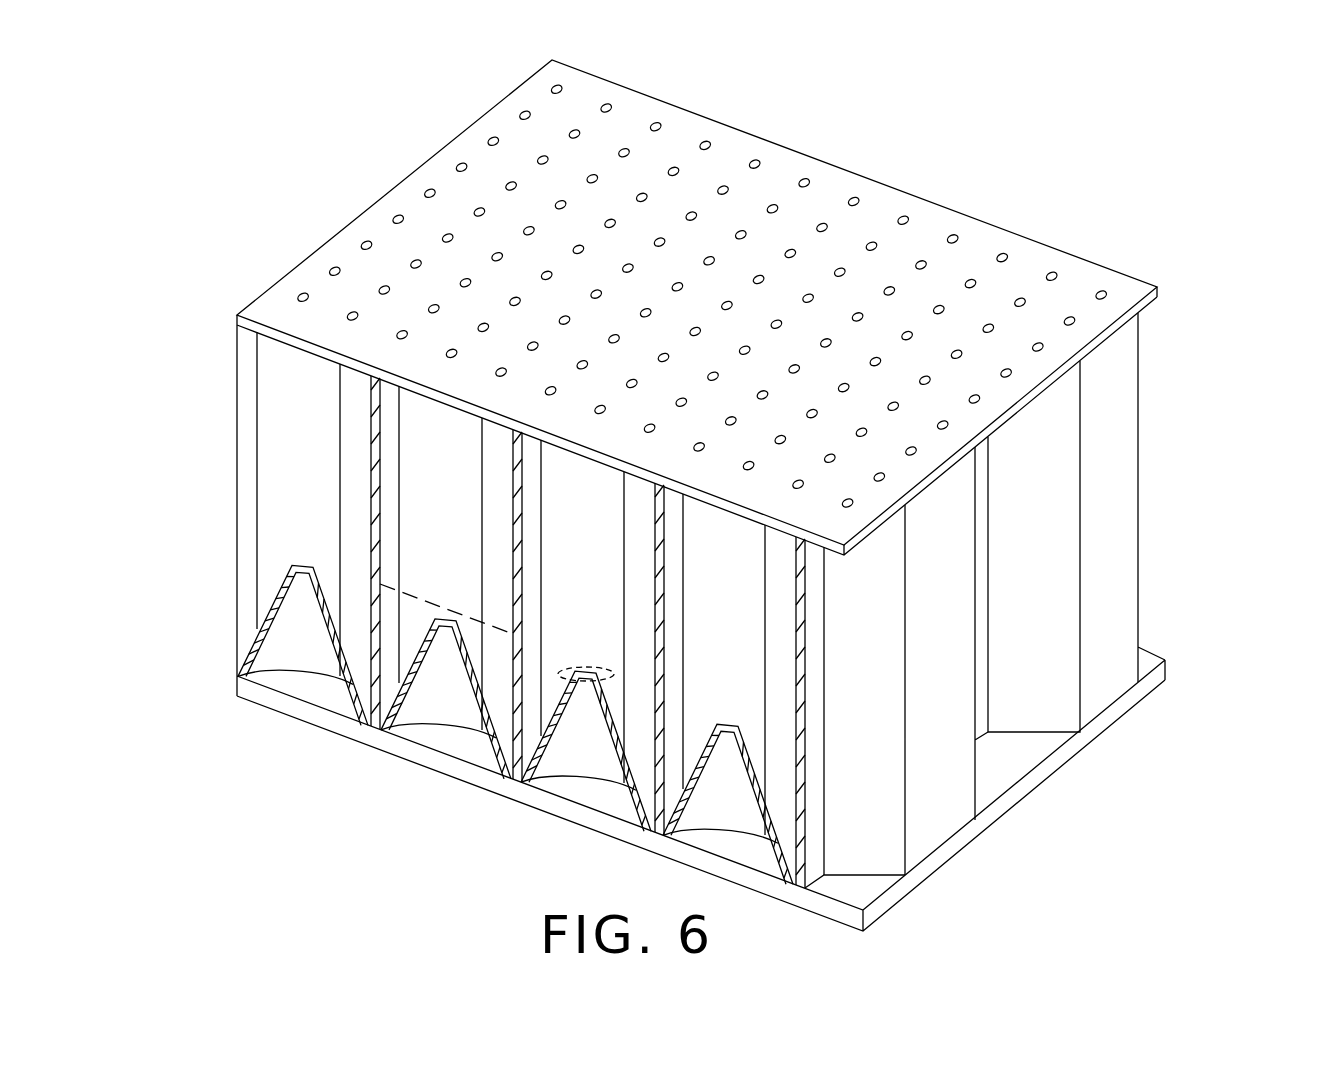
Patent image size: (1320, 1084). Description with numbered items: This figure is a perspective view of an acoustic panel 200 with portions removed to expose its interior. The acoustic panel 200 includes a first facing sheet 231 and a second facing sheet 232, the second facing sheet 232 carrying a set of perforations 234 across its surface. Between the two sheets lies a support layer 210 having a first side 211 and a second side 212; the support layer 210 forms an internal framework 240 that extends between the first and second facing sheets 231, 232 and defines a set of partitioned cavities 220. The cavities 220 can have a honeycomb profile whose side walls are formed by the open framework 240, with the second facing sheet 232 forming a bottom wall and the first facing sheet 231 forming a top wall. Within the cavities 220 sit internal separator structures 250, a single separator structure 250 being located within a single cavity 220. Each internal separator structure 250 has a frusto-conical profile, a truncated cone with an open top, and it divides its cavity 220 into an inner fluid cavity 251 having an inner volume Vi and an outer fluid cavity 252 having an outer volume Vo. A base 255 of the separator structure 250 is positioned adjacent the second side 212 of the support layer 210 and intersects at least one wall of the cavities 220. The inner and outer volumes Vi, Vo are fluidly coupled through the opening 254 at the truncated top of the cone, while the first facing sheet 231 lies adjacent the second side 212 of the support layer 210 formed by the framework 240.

The acoustic panel 200 is at (1013, 125).
The support layer 210 is at (1115, 497).
The first side 211 is at (1108, 338).
The second side 212 is at (1110, 703).
The partitioned cavities 220 is at (297, 522).
The first facing sheet 231 is at (987, 822).
The second facing sheet 232 is at (721, 307).
The perforations 234 is at (367, 244).
The internal framework 240 is at (1105, 577).
The internal separator structure 250 is at (692, 803).
The inner fluid cavity 251 is at (460, 713).
The outer fluid cavity 252 is at (470, 551).
The opening 254 is at (563, 670).
The base 255 is at (330, 673).
The outer volume Vo is at (297, 425).
The inner volume Vi is at (300, 643).